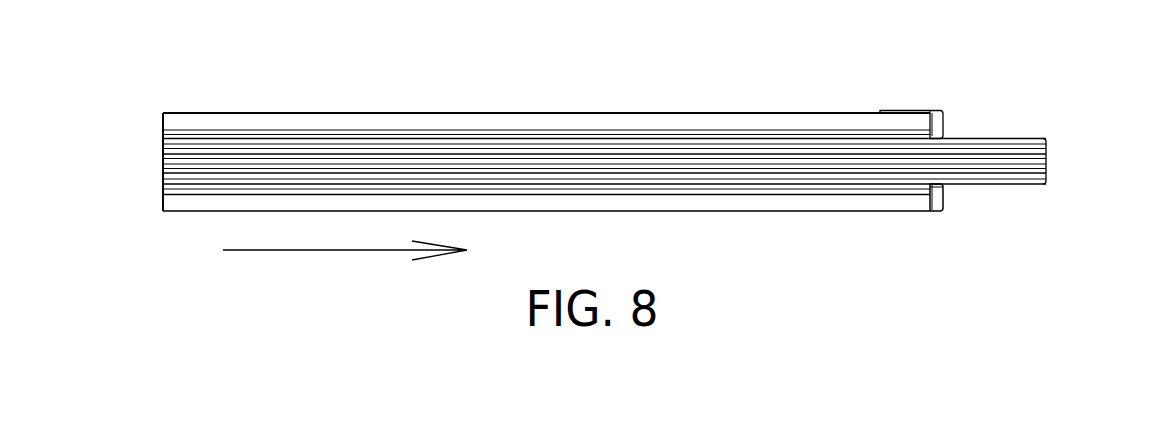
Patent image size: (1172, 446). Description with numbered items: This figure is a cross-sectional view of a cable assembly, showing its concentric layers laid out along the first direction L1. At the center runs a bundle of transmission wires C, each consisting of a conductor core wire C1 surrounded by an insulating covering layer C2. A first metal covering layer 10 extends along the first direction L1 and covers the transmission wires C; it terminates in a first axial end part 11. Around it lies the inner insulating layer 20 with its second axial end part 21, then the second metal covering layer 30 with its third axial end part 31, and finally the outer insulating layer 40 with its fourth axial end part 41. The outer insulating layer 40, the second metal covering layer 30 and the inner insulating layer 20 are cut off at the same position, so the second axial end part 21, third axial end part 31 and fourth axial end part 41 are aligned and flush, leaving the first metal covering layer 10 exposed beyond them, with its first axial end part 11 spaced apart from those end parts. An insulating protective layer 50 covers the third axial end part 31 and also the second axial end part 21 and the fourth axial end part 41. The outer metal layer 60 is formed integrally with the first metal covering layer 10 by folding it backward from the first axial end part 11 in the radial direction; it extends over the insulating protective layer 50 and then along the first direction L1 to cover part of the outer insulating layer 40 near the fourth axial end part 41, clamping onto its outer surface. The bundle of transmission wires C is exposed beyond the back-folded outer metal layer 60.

The first metal covering layer 10 is at (756, 140).
The first axial end part 11 is at (943, 187).
The inner insulating layer 20 is at (703, 135).
The second axial end part 21 is at (930, 190).
The second metal covering layer 30 is at (664, 129).
The third axial end part 31 is at (930, 194).
The outer insulating layer 40 is at (582, 112).
The fourth axial end part 41 is at (939, 211).
The insulating protective layer 50 is at (937, 125).
The outer metal layer 60 is at (900, 112).
The transmission wire C is at (1003, 138).
The conductor core wire C1 is at (1040, 149).
The insulating covering layer C2 is at (1040, 140).
The first direction L1 is at (362, 249).